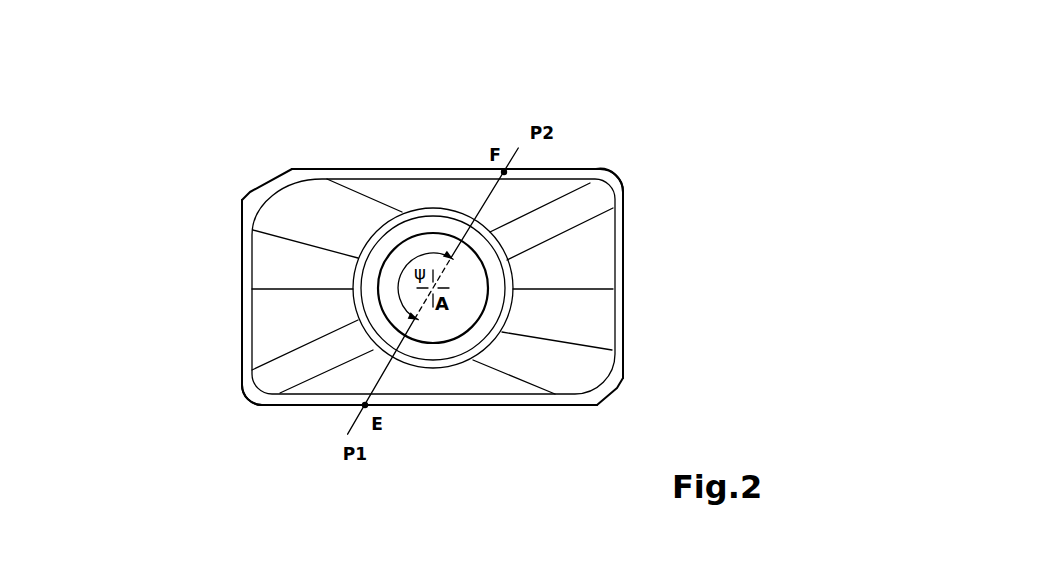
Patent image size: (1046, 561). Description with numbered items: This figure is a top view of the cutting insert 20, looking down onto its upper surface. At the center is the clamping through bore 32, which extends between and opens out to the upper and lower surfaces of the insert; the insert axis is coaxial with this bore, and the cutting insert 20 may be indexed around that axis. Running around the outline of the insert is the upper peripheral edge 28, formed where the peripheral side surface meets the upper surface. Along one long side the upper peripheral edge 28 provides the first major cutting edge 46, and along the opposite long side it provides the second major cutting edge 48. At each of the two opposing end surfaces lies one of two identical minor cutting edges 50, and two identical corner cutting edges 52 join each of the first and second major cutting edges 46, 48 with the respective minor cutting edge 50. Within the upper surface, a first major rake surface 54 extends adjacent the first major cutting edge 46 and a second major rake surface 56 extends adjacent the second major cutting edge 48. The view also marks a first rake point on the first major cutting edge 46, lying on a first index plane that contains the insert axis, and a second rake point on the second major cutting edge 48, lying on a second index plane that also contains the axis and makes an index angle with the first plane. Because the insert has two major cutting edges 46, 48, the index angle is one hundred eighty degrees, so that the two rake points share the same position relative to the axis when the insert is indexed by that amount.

The cutting insert 20 is at (208, 172).
The upper peripheral edge 28 is at (335, 168).
The clamping through bore 32 is at (452, 320).
The first major cutting edge 46 is at (413, 408).
The second major cutting edge 48 is at (420, 168).
The minor cutting edge 50 is at (625, 273).
The corner cutting edge 52 is at (618, 180).
The first major rake surface 54 is at (335, 378).
The second major rake surface 56 is at (445, 193).